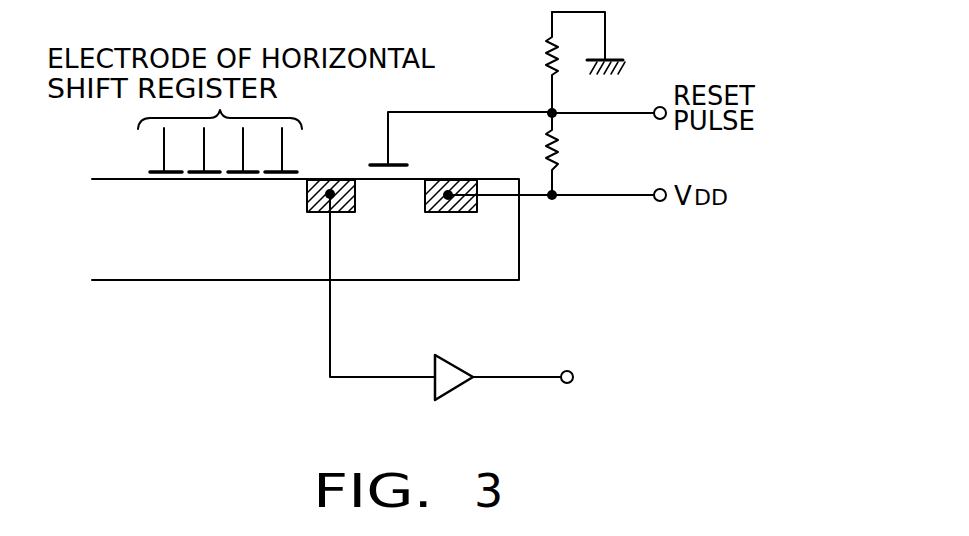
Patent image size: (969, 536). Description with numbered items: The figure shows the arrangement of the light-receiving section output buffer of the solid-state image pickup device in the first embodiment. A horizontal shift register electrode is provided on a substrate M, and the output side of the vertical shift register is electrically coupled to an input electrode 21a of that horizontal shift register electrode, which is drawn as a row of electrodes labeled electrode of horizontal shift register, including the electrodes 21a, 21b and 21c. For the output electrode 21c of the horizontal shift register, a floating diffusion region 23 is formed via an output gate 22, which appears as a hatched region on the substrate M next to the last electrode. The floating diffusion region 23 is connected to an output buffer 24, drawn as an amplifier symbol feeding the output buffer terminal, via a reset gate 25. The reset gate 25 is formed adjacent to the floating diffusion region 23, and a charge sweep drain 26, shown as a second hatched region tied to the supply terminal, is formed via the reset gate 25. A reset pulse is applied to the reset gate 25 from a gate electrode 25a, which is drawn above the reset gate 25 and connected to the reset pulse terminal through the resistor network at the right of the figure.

The input electrode 21a is at (157, 181).
The electrode of horizontal shift register 21b is at (212, 181).
The output electrode 21c is at (236, 181).
The output gate 22 is at (301, 179).
The floating diffusion region 23 is at (343, 216).
The output buffer 24 is at (463, 345).
The reset gate 25 is at (412, 182).
The gate electrode 25a is at (377, 162).
The charge sweep drain 26 is at (447, 216).
The substrate M is at (519, 242).